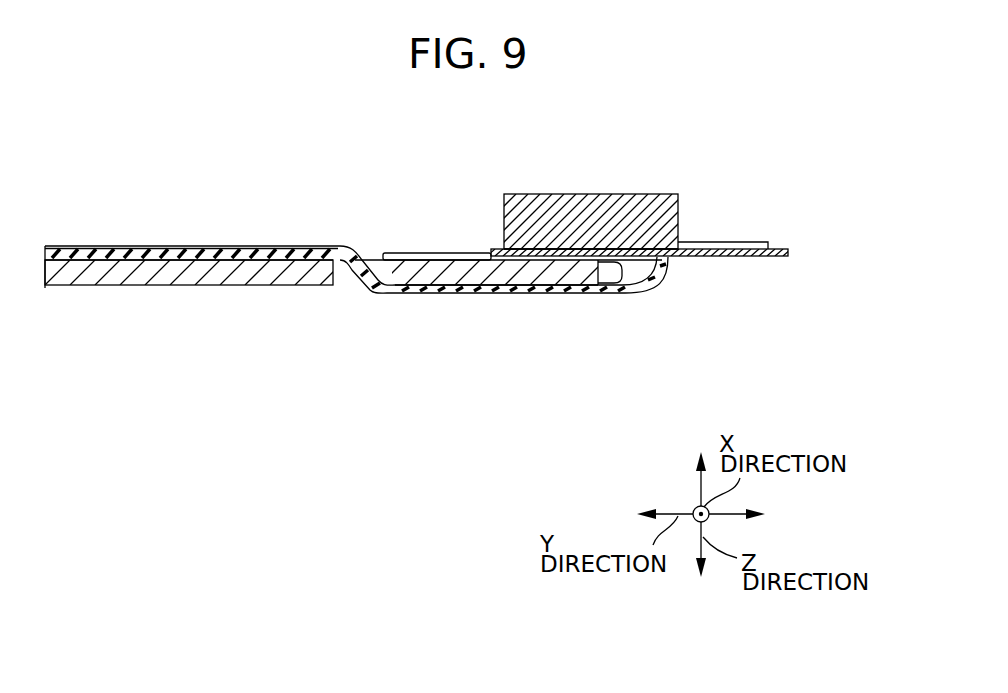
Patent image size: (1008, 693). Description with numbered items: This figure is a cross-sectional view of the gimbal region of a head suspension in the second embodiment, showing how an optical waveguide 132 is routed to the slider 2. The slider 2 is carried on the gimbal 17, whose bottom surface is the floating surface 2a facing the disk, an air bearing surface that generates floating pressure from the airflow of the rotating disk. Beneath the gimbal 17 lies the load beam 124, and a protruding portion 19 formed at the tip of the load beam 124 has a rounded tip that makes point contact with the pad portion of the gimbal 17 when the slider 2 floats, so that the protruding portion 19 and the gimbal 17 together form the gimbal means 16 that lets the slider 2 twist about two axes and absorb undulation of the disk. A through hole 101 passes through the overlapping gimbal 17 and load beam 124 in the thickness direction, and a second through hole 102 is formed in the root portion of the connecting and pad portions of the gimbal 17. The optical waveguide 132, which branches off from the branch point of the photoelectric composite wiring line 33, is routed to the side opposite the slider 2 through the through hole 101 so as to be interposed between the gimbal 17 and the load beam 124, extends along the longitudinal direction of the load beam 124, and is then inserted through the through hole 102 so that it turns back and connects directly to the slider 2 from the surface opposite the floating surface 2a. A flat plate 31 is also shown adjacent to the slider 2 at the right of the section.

The slider 2 is at (590, 202).
The floating surface 2a is at (640, 194).
The gimbal means 16 is at (530, 306).
The gimbal 17 is at (197, 248).
The protruding portion 19 is at (601, 265).
The mounting plate 31 is at (713, 243).
The photoelectric composite wiring line 33 is at (94, 232).
The through hole 101 is at (375, 268).
The through hole 102 is at (667, 263).
The load beam 124 is at (248, 275).
The optical waveguide 132 is at (375, 305).